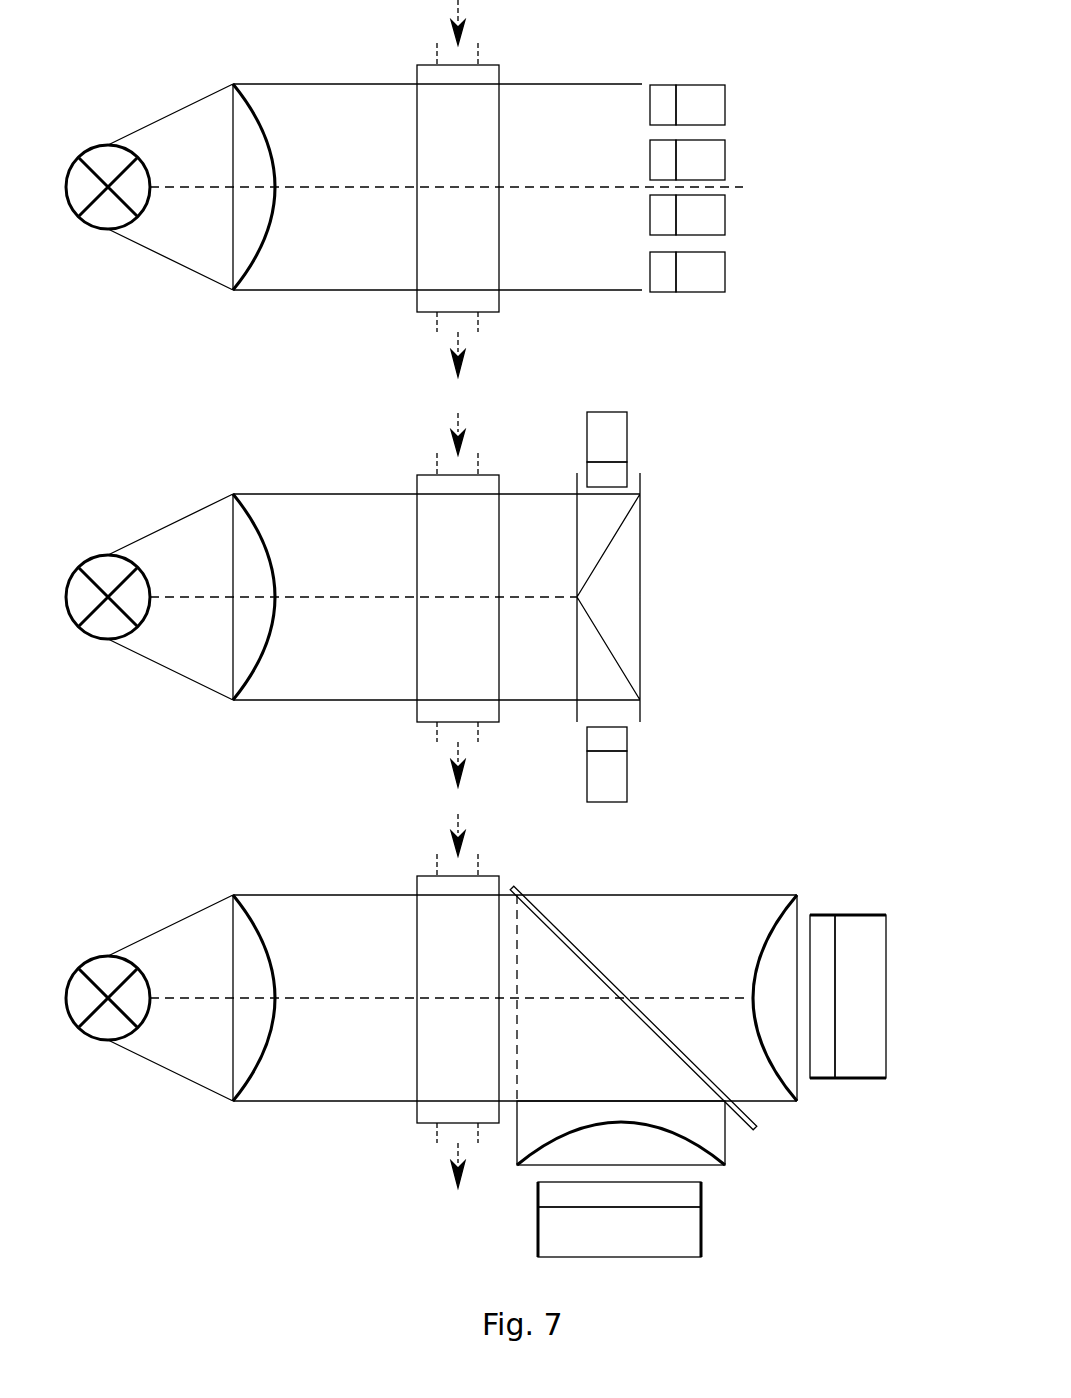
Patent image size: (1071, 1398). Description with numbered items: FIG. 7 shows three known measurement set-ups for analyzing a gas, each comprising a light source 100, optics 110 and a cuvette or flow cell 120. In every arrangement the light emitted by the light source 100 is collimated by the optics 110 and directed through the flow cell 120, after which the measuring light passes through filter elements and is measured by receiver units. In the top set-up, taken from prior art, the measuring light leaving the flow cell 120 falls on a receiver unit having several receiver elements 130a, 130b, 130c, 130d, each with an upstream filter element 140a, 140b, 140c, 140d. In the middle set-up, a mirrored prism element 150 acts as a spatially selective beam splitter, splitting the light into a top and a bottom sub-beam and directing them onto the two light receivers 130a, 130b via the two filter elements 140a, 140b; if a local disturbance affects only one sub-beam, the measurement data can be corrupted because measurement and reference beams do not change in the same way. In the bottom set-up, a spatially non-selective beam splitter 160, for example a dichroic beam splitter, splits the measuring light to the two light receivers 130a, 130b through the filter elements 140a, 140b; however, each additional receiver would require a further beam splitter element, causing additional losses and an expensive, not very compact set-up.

The light source 100 is at (90, 139).
The optics 110 is at (220, 75).
The cuvette or flow cell 120 is at (410, 65).
The receiver unit 130a is at (725, 103).
The receiver unit 130b is at (725, 158).
The receiver unit 130c is at (725, 213).
The receiver unit 130d is at (725, 270).
The filter element 140a is at (650, 106).
The filter element 140b is at (650, 161).
The filter element 140c is at (650, 216).
The filter element 140d is at (650, 273).
The prism element 150 is at (642, 598).
The beam splitter 160 is at (758, 1128).